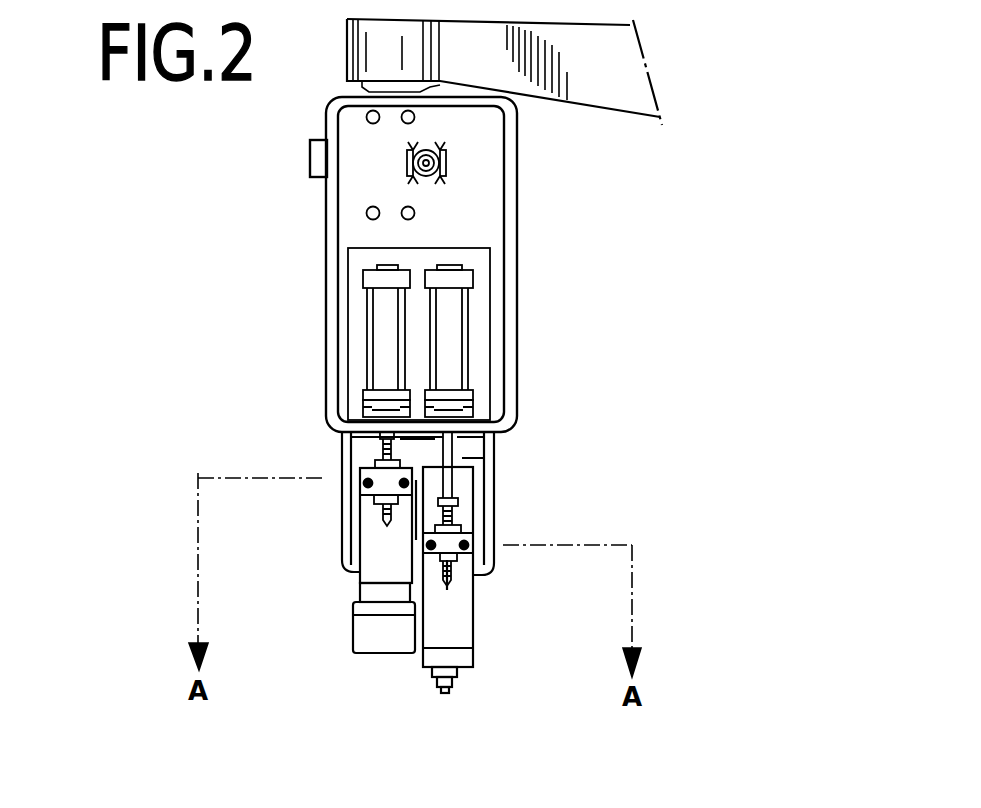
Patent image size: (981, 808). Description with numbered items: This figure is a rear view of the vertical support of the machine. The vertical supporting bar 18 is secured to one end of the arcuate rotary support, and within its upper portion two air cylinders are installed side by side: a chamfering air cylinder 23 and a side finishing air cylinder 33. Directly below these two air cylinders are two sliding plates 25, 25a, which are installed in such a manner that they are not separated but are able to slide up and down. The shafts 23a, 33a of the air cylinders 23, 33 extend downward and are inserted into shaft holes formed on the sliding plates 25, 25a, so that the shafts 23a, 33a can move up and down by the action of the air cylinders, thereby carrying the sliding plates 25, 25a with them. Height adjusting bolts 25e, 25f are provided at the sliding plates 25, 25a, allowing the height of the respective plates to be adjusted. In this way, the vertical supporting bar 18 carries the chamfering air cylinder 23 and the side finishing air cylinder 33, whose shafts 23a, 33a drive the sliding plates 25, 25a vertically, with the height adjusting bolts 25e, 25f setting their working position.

The vertical supporting bar 18 is at (517, 215).
The chamfering air cylinder 23 is at (385, 320).
The side finishing air cylinder 33 is at (450, 345).
The shaft of the chamfering air cylinder 23a is at (347, 438).
The shaft of the side finishing air cylinder 33a is at (455, 452).
The sliding plate 25 is at (380, 560).
The sliding plate 25a is at (467, 594).
The height adjusting bolt 25e is at (360, 506).
The height adjusting bolt 25f is at (455, 519).